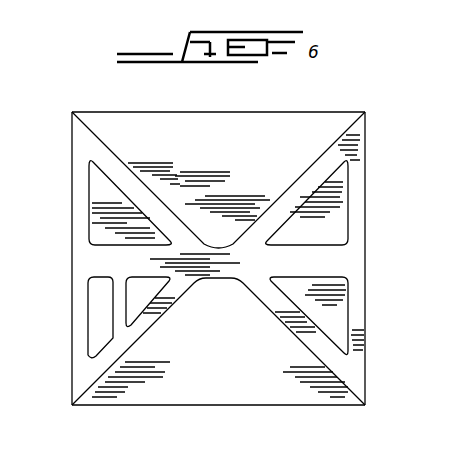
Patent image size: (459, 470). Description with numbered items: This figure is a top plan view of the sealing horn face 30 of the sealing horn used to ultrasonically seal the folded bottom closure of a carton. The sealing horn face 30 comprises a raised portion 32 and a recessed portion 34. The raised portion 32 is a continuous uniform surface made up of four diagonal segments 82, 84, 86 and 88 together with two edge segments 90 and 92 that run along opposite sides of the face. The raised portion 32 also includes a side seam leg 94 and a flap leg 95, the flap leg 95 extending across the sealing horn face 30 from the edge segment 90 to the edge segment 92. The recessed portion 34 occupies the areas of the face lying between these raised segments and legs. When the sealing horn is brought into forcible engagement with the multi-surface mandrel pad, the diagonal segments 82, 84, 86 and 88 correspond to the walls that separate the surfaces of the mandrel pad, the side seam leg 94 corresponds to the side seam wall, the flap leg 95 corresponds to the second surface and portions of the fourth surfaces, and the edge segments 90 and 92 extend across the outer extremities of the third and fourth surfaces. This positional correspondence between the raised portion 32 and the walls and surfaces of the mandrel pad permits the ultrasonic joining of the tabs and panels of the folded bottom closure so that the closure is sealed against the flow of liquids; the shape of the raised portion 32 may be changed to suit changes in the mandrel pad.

The sealing horn face 30 is at (381, 308).
The raised portion 32 is at (220, 258).
The recessed portion 34 is at (326, 124).
The diagonal segment 82 is at (111, 163).
The diagonal segment 84 is at (287, 200).
The diagonal segment 86 is at (322, 352).
The diagonal segment 88 is at (152, 312).
The edge segment 90 is at (76, 321).
The edge segment 92 is at (367, 350).
The side seam leg 94 is at (118, 322).
The flap leg 95 is at (300, 262).